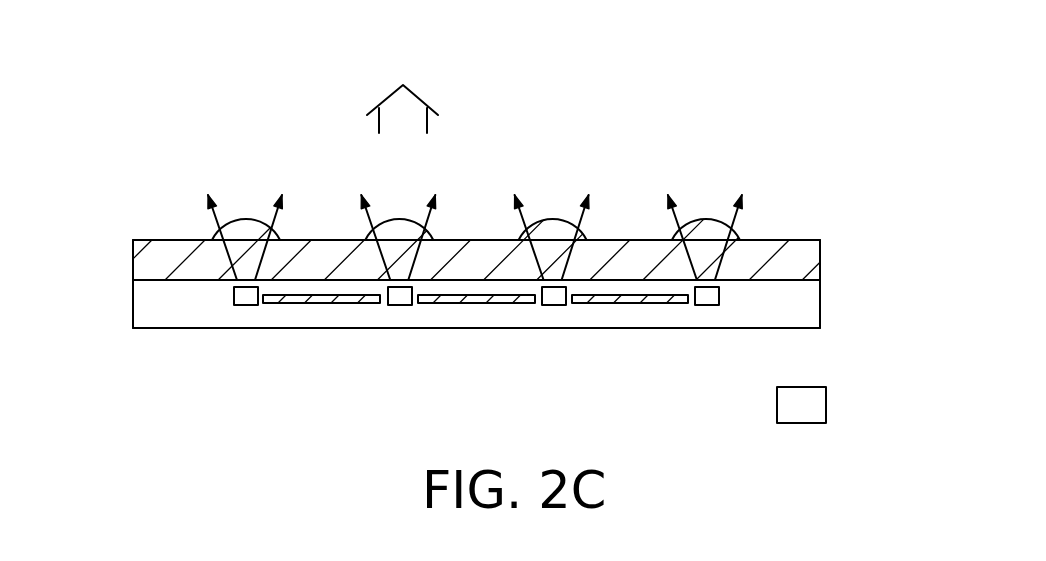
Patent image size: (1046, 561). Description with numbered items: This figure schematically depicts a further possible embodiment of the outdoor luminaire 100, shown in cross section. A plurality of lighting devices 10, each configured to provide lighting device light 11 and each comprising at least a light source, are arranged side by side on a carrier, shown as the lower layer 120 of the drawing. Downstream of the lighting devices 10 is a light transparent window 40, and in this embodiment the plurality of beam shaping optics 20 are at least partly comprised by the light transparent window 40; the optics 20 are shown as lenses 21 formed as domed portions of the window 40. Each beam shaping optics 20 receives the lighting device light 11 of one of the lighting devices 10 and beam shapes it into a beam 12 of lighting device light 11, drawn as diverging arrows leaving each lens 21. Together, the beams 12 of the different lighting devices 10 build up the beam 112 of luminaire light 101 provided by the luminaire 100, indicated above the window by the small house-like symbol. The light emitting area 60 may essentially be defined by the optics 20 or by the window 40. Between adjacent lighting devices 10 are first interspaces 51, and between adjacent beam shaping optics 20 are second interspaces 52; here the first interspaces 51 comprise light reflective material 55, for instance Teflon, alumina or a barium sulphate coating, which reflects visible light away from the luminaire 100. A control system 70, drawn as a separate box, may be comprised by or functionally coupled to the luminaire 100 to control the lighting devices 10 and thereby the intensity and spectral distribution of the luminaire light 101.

The outdoor luminaire 100 is at (833, 143).
The light transparent window 40 is at (152, 212).
The second interspaces 52 is at (340, 228).
The beam shaping optics 20 is at (458, 178).
The lenses 21 is at (237, 208).
The beam of lighting device light 12 is at (443, 198).
The lighting device 10 is at (245, 310).
The lighting device light 11 is at (264, 263).
The first interspaces 51 is at (316, 305).
The light reflective material 55 is at (344, 303).
The substrate 120 is at (760, 298).
The light emitting area 60 is at (668, 117).
The beam of luminaire light 112 is at (482, 97).
The luminaire light 101 is at (410, 116).
The control system 70 is at (837, 408).